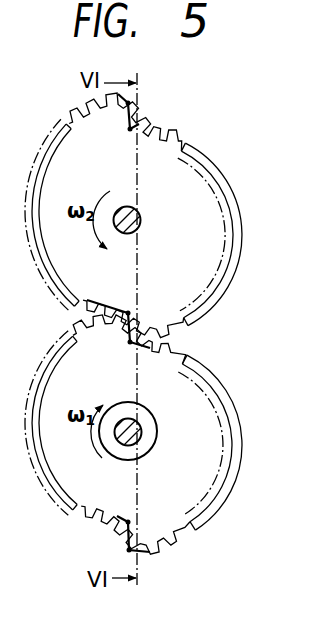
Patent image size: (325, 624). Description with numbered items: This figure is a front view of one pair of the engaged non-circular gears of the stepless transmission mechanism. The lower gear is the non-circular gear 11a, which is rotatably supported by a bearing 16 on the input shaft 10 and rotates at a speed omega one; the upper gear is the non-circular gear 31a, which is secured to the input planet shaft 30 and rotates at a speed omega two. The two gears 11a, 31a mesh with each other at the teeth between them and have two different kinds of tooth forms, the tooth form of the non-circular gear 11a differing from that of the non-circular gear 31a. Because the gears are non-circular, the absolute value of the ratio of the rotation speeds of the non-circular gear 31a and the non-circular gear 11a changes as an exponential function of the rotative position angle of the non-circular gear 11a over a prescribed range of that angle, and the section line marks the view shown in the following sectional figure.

The input shaft 10 is at (128, 421).
The non-circular gear 11a is at (196, 399).
The bearing 16 is at (158, 427).
The input planet shaft 30 is at (132, 214).
The non-circular gear 31a is at (206, 209).